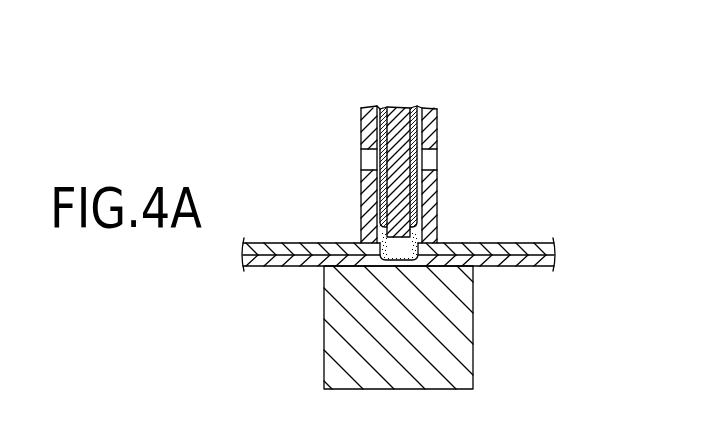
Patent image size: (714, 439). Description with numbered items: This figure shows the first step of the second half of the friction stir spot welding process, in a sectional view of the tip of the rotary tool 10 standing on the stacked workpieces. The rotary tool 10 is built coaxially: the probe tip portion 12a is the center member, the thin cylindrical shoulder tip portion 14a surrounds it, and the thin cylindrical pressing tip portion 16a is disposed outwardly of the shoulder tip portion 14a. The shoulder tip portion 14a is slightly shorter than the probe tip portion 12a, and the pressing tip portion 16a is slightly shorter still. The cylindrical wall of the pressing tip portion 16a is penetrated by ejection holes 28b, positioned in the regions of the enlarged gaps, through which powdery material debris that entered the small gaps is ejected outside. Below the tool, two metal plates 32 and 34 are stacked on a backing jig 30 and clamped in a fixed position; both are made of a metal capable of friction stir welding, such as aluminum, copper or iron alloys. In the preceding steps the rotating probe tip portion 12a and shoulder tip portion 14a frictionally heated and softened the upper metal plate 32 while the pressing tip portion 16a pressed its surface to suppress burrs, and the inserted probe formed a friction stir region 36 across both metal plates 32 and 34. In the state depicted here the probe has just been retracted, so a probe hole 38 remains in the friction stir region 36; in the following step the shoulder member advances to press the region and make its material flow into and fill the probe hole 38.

The rotary tool 10 is at (470, 128).
The probe tip portion 12a is at (398, 110).
The shoulder tip portion 14a is at (415, 110).
The pressing tip portion 16a is at (367, 129).
The ejection holes 28b is at (362, 162).
The backing jig 30 is at (338, 332).
The metal plate 32 is at (527, 247).
The metal plate 34 is at (535, 263).
The friction stir region 36 is at (382, 240).
The probe hole 38 is at (400, 246).